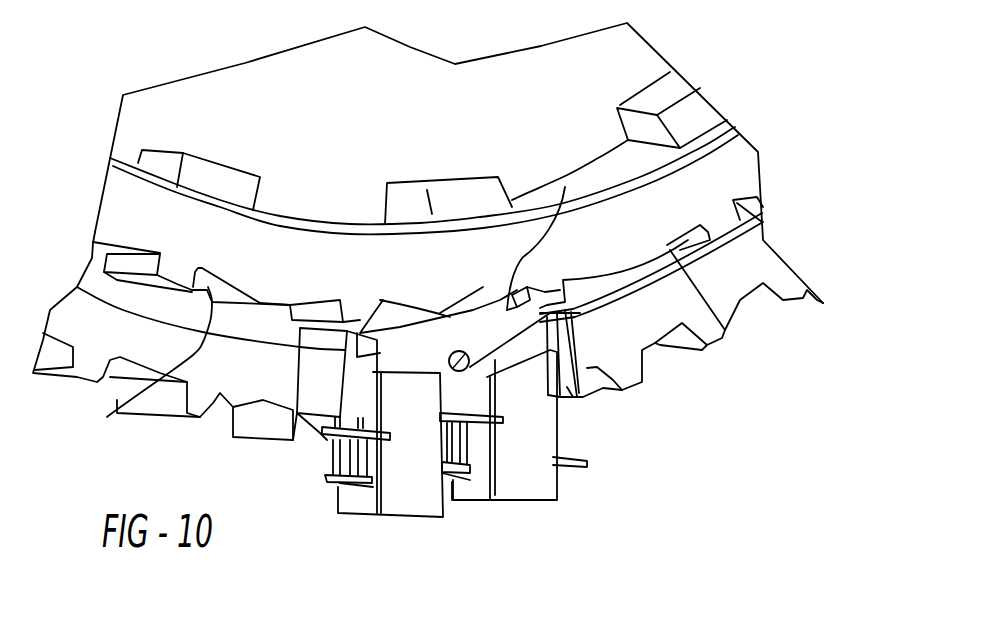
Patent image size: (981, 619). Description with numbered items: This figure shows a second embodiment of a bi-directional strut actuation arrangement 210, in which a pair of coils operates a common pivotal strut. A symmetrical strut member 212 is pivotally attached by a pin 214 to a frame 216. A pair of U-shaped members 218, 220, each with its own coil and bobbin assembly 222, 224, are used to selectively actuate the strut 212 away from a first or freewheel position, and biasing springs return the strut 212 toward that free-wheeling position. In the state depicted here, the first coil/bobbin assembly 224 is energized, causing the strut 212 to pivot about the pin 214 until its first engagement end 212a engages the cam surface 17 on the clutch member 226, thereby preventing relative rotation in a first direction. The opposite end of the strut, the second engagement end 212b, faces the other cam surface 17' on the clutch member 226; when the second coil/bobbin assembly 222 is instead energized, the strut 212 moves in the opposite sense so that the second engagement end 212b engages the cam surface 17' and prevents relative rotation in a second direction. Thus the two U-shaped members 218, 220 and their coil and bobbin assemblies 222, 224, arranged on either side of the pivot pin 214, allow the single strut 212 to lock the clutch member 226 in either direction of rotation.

The cam surface 17 is at (469, 210).
The cam surface 17' is at (398, 348).
The bi-directional strut actuation arrangement 210 is at (582, 428).
The symmetrical strut member 212 is at (511, 238).
The first engagement end 212a is at (515, 300).
The second engagement end 212b is at (402, 251).
The pin 214 is at (467, 352).
The frame 216 is at (577, 387).
The U-shaped member 218 is at (410, 497).
The U-shaped member 220 is at (530, 483).
The coil and bobbin assembly 222 is at (333, 485).
The coil and bobbin assembly 224 is at (582, 466).
The clutch member 226 is at (327, 267).